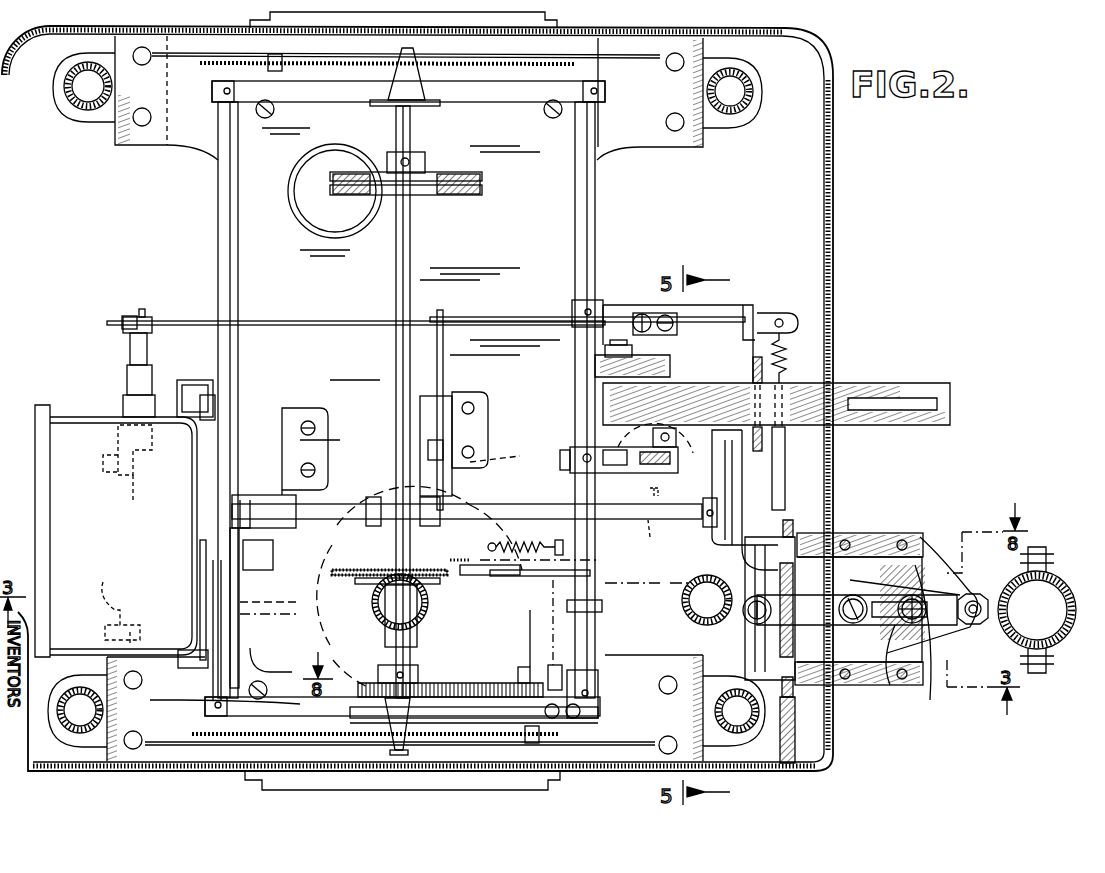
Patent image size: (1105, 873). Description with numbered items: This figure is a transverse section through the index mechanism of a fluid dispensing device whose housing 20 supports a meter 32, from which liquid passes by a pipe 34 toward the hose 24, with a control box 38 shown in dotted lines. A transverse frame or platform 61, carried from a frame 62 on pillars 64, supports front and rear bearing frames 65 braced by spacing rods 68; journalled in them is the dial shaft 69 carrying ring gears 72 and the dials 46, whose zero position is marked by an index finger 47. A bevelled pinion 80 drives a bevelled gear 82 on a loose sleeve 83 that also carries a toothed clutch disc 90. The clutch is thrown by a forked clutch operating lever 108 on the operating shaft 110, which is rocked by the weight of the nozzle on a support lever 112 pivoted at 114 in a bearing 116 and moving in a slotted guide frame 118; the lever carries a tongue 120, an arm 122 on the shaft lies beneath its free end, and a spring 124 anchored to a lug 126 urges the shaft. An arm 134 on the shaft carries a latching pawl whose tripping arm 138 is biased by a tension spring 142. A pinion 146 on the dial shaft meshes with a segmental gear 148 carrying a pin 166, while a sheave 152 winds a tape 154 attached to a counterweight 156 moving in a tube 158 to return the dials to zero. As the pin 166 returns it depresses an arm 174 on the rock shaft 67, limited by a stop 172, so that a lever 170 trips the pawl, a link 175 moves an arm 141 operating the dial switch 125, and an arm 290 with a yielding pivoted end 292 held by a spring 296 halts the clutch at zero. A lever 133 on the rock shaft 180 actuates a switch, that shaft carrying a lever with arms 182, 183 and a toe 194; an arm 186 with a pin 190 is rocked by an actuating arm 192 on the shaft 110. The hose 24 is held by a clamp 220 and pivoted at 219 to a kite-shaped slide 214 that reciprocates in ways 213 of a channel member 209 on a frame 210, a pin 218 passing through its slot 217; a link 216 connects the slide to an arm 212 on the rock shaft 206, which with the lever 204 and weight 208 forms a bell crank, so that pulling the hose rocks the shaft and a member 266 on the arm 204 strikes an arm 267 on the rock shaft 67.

The housing 20 is at (818, 213).
The hose 24 is at (1050, 590).
The meter 32 is at (431, 567).
The pipe 34 is at (700, 614).
The control box 38 is at (65, 510).
The dial 46 is at (632, 60).
The index finger 47 is at (412, 92).
The transverse frame 61 is at (415, 402).
The frame 62 is at (185, 137).
The pillars 64 is at (85, 102).
The bearing frames 65 is at (328, 92).
The rock shaft 67 is at (598, 632).
The spacing rods 68 is at (218, 259).
The dial shaft 69 is at (396, 255).
The ring gears 72 is at (206, 68).
The bevelled pinion 80 is at (428, 614).
The bevelled gear 82 is at (440, 584).
The loose sleeve 83 is at (385, 622).
The toothed disc 90 is at (345, 570).
The clutch operating lever 108 is at (372, 508).
The operating shaft 110 is at (661, 520).
The nozzle support lever 112 is at (900, 426).
The pivot 114 is at (605, 350).
The bearing 116 is at (640, 367).
The slotted guide frame 118 is at (753, 370).
The tongue 120 is at (776, 404).
The arm 122 is at (785, 456).
The spring 124 is at (787, 354).
The dial switch 125 is at (114, 512).
The lug 126 is at (766, 312).
The lever 133 is at (198, 572).
The arm 134 is at (488, 402).
The tripping arm 138 is at (443, 343).
The arm 141 is at (135, 382).
The tension spring 142 is at (330, 438).
The pinion 146 is at (420, 678).
The segmental gear 148 is at (507, 680).
The sheave 152 is at (484, 190).
The tape 154 is at (421, 196).
The counterweight 156 is at (310, 205).
The tube 158 is at (290, 189).
The pin 166 is at (524, 660).
The lever 170 is at (498, 318).
The stop 172 is at (574, 635).
The arm 174 is at (532, 660).
The link 175 is at (333, 327).
The rock shaft 180 is at (143, 660).
The arm 182 is at (273, 596).
The arm 183 is at (299, 633).
The arm 186 is at (265, 537).
The pin 190 is at (235, 582).
The actuating arm 192 is at (232, 546).
The toe 194 is at (277, 659).
The lever 204 is at (726, 562).
The rock shaft 206 is at (762, 650).
The weight 208 is at (629, 538).
The channel member 209 is at (855, 573).
The frame 210 is at (795, 742).
The arm 212 is at (782, 592).
The ways 213 is at (862, 535).
The slide 214 is at (935, 557).
The link 216 is at (800, 622).
The slot 217 is at (907, 671).
The pin 218 is at (938, 655).
The pivotal connection 219 is at (975, 598).
The clamp 220 is at (1008, 645).
The block 266 is at (639, 448).
The arm 267 is at (648, 487).
The arm 290 is at (517, 609).
The pivoted end 292 is at (445, 558).
The spring 296 is at (525, 539).